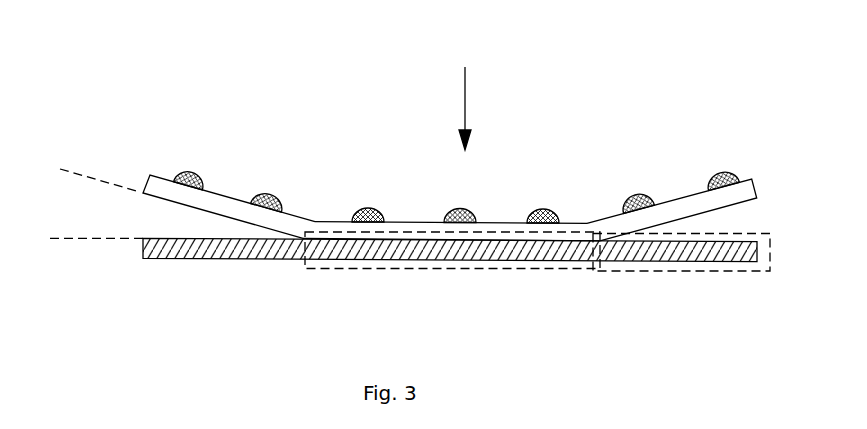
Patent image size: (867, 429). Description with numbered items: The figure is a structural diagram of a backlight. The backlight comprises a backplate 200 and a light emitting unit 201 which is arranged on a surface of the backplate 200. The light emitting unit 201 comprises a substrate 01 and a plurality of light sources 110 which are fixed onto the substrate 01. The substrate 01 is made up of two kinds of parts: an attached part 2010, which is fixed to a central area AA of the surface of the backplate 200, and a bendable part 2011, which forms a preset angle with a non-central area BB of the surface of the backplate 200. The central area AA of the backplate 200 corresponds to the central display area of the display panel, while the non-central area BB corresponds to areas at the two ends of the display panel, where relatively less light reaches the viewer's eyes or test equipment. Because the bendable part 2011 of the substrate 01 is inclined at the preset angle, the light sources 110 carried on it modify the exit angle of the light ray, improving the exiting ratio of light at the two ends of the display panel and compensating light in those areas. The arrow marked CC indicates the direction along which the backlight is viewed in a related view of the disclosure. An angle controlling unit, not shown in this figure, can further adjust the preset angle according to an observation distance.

The light emitting unit 201 is at (287, 63).
The light sources 110 is at (176, 171).
The substrate 01 is at (337, 126).
The bendable part 2011 is at (233, 212).
The attached part 2010 is at (337, 225).
The backplate 200 is at (148, 240).
The central area AA is at (363, 268).
The non-central area BB is at (660, 268).
The CC direction CC is at (486, 108).